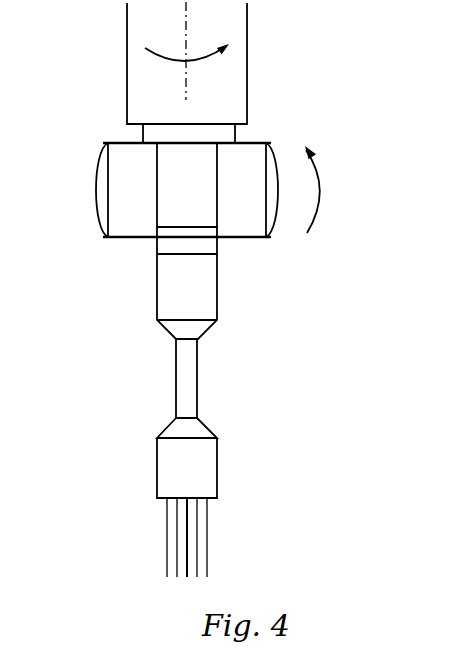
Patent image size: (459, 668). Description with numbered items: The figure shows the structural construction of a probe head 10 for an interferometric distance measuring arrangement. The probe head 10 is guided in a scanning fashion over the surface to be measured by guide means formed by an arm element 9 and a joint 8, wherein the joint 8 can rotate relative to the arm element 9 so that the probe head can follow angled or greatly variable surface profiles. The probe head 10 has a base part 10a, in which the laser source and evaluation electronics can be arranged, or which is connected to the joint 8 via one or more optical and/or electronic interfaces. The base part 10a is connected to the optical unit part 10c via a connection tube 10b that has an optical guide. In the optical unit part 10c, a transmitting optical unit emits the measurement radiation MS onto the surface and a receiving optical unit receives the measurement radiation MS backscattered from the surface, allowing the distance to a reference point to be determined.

The joint 8 is at (245, 223).
The arm element 9 is at (230, 20).
The probe head 10 is at (191, 360).
The base part 10a is at (202, 290).
The connection tube 10b is at (185, 377).
The optical unit part 10c is at (197, 462).
The measurement radiation MS is at (212, 537).